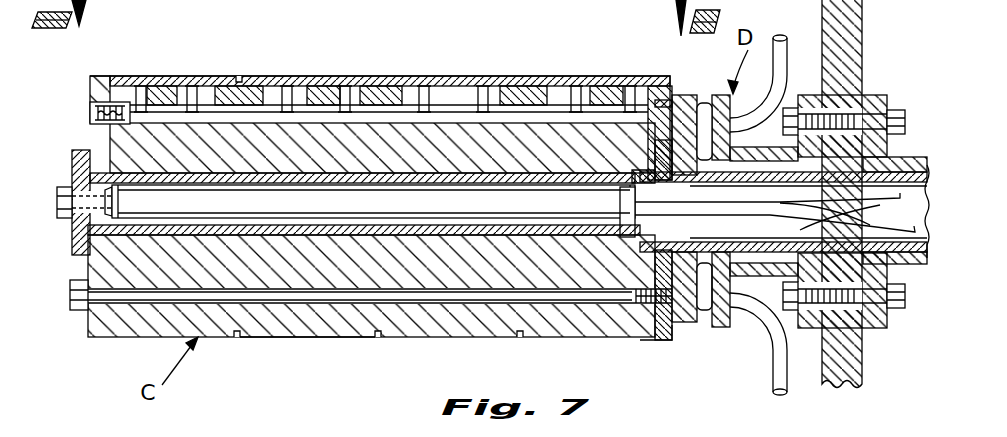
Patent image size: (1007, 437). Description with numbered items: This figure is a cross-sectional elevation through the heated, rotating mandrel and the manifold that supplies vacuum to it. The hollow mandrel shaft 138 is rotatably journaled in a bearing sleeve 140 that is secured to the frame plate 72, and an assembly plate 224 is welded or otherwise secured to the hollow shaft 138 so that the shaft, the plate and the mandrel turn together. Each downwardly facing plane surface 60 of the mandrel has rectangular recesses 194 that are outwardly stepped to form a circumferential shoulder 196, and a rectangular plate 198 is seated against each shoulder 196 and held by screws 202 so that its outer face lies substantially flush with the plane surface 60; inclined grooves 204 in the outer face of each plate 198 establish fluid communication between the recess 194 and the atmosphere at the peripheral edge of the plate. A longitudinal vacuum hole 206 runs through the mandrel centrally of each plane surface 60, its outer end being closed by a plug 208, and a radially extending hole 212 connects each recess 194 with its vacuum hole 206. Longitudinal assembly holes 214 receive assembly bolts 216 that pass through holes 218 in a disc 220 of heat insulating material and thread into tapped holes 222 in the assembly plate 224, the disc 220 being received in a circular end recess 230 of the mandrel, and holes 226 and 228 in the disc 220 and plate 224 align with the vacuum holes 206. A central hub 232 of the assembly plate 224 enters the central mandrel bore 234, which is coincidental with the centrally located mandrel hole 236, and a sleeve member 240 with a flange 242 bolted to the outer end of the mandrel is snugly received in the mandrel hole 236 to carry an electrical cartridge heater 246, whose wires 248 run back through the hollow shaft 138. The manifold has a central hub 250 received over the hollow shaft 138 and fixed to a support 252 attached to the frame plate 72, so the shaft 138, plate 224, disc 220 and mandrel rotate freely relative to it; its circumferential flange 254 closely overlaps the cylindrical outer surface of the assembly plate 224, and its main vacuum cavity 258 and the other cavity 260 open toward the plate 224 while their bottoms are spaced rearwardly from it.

The plane surface 60 is at (333, 338).
The frame plate 72 is at (822, 18).
The hollow mandrel shaft 138 is at (912, 264).
The bearing sleeve 140 is at (918, 160).
The rectangular recess 194 is at (185, 76).
The circumferential shoulder 196 is at (108, 96).
The rectangular plate 198 is at (165, 76).
The screw 202 is at (138, 84).
The inclined groove 204 is at (110, 76).
The vacuum hole 206 is at (218, 116).
The plug 208 is at (90, 110).
The radially extending hole 212 is at (239, 75).
The assembly hole 214 is at (115, 283).
The assembly bolt 216 is at (152, 302).
The hole 218 is at (660, 290).
The disc of heat insulating material 220 is at (652, 123).
The tapped hole 222 is at (680, 322).
The assembly plate 224 is at (190, 187).
The hole 226 is at (658, 98).
The hole 228 is at (672, 95).
The circular end recess 230 is at (658, 339).
The central hub 232 is at (655, 249).
The central mandrel bore 234 is at (645, 183).
The centrally located mandrel hole 236 is at (345, 180).
The sleeve member 240 is at (105, 123).
The flange 242 is at (78, 165).
The electrical cartridge heater 246 is at (374, 203).
The wires 248 is at (820, 229).
The central hub 250 is at (752, 180).
The support 252 is at (772, 277).
The circumferential flange 254 is at (712, 96).
The main vacuum cavity 258 is at (665, 156).
The cavity 260 is at (703, 328).